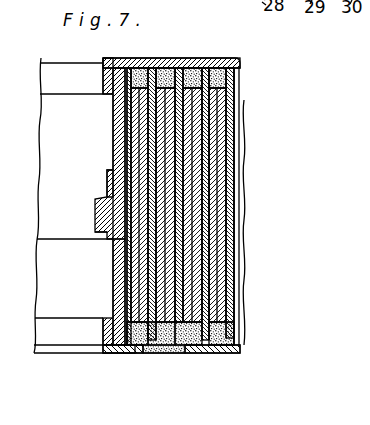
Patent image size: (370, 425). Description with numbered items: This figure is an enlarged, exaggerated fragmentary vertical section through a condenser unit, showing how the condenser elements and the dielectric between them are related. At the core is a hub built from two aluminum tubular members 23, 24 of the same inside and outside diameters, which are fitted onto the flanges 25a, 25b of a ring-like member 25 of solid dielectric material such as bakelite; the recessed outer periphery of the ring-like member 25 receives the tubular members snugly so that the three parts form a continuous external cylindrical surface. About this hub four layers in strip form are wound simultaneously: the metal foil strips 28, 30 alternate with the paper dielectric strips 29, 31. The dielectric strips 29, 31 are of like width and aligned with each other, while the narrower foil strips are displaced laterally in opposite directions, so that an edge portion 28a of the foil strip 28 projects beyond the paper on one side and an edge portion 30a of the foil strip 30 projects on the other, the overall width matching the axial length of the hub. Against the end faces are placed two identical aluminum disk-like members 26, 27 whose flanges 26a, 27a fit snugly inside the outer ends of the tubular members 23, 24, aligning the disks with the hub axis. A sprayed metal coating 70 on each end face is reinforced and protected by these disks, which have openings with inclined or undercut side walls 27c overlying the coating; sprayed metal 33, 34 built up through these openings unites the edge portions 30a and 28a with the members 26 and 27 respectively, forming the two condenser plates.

The tubular metal member 23 is at (112, 119).
The tubular metal member 24 is at (113, 287).
The ring-like member 25 is at (96, 212).
The flange 25a is at (106, 182).
The flange 25b is at (98, 244).
The disk-like member 26 is at (238, 62).
The flange 26a is at (102, 76).
The disk-like member 27 is at (243, 353).
The flange 27a is at (101, 332).
The inclined side wall of opening 27c is at (237, 30).
The foil strip 28 is at (135, 303).
The edge portion of foil strip 28a is at (262, 320).
The dielectric strip 29 is at (116, 175).
The foil strip 30 is at (113, 161).
The edge portion of foil strip 30a is at (252, 48).
The dielectric strip 31 is at (117, 145).
The sprayed metal 33 is at (166, 68).
The sprayed metal 34 is at (153, 357).
The sprayed metal coating 70 is at (240, 80).